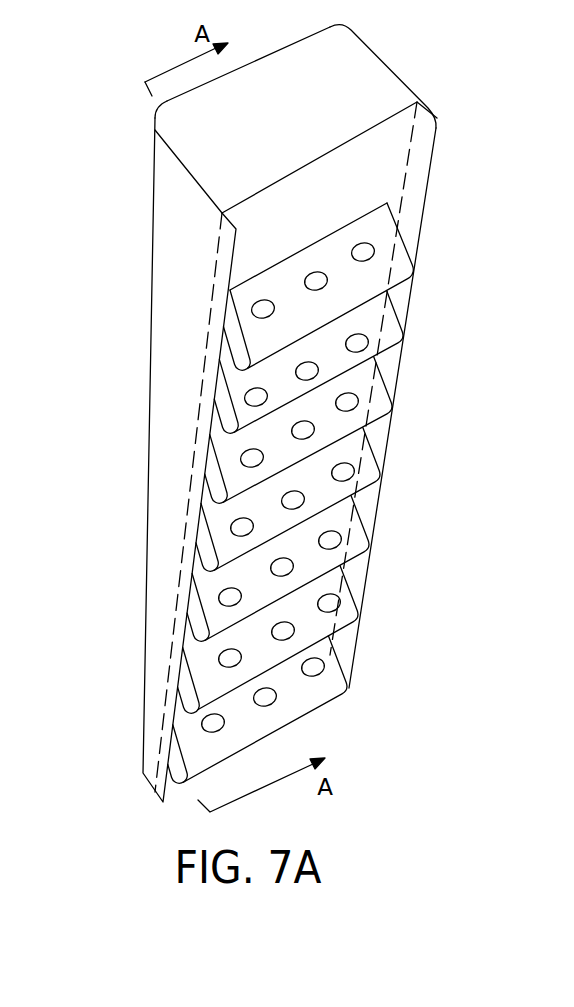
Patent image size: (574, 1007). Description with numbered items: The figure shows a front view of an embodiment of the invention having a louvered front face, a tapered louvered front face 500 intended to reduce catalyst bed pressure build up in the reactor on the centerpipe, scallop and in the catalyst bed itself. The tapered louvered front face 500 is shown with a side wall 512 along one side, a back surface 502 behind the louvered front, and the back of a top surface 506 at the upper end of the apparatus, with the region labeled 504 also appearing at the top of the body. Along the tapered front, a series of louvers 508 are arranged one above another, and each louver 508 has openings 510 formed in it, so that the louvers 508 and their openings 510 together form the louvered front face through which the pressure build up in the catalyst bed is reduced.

The tapered louvered front face 500 is at (128, 433).
The back surface 502 is at (153, 213).
The top surface 504 is at (263, 121).
The back of a top surface 506 is at (263, 57).
The louver 508 is at (405, 259).
The openings 510 is at (366, 245).
The side wall 512 is at (192, 315).